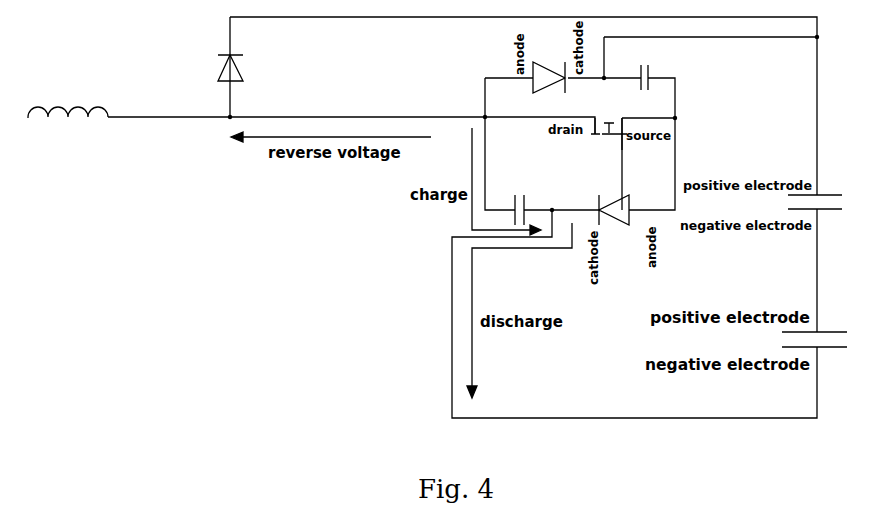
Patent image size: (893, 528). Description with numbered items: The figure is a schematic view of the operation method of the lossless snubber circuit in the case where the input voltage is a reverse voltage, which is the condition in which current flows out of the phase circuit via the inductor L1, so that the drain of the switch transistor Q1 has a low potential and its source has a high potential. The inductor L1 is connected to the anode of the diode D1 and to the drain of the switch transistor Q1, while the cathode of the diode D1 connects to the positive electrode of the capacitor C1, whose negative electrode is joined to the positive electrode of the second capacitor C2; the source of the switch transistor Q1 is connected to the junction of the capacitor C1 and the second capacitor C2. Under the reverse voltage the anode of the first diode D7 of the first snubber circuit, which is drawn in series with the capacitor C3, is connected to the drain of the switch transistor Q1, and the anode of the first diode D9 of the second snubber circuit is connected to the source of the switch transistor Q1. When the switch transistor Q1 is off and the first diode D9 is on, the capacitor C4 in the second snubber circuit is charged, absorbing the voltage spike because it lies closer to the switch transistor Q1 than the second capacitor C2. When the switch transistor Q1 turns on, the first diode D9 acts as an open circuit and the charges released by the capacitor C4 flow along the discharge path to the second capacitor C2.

The inductor L1 is at (68, 98).
The diode D1 is at (243, 68).
The first diode D7 is at (549, 87).
The capacitor C3 is at (642, 68).
The switch transistor Q1 is at (607, 139).
The capacitor C4 is at (517, 201).
The first diode D9 is at (614, 201).
The capacitor C1 is at (826, 204).
The second capacitor C2 is at (825, 340).